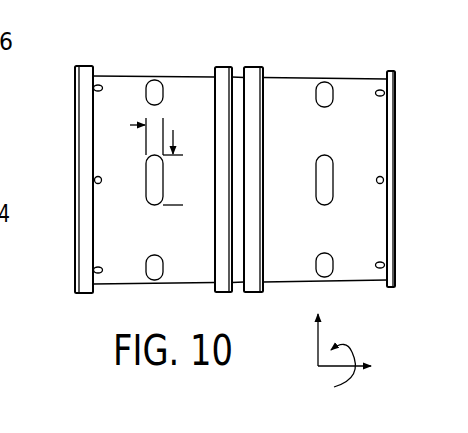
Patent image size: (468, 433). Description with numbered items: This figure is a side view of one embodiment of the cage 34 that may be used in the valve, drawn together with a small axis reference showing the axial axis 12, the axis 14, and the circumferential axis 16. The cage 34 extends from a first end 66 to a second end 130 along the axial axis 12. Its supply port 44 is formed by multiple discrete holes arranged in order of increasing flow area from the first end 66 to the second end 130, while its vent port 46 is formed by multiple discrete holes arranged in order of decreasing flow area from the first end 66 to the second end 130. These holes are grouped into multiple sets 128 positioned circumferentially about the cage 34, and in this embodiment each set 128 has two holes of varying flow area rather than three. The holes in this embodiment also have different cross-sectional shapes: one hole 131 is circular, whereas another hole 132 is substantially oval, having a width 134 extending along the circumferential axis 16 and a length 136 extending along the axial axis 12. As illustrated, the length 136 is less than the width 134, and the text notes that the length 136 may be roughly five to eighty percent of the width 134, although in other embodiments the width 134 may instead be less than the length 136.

The axial axis 12 is at (331, 367).
The vertical axis 14 is at (317, 346).
The circumferential axis 16 is at (352, 347).
The cage 34 is at (369, 228).
The supply port 44 is at (124, 62).
The vent port 46 is at (357, 62).
The first end 66 is at (75, 152).
The sets 128 is at (142, 256).
The second end 130 is at (0, 105).
The hole 131 is at (97, 85).
The hole 132 is at (156, 87).
The width 134 is at (173, 206).
The length 136 is at (164, 125).